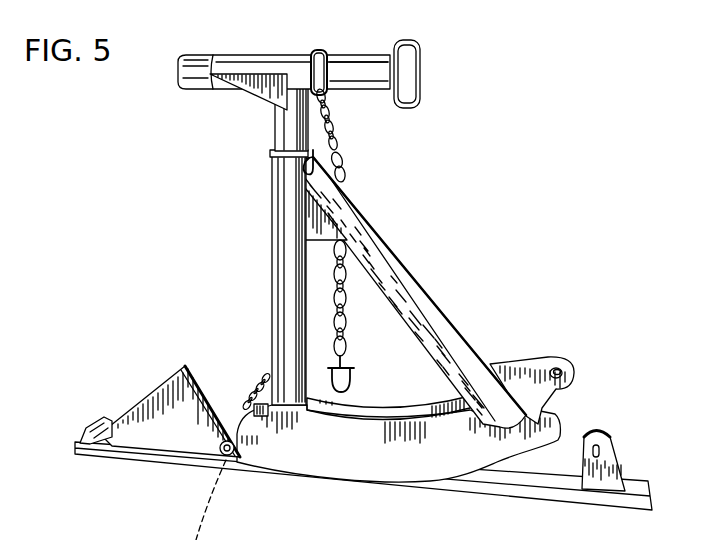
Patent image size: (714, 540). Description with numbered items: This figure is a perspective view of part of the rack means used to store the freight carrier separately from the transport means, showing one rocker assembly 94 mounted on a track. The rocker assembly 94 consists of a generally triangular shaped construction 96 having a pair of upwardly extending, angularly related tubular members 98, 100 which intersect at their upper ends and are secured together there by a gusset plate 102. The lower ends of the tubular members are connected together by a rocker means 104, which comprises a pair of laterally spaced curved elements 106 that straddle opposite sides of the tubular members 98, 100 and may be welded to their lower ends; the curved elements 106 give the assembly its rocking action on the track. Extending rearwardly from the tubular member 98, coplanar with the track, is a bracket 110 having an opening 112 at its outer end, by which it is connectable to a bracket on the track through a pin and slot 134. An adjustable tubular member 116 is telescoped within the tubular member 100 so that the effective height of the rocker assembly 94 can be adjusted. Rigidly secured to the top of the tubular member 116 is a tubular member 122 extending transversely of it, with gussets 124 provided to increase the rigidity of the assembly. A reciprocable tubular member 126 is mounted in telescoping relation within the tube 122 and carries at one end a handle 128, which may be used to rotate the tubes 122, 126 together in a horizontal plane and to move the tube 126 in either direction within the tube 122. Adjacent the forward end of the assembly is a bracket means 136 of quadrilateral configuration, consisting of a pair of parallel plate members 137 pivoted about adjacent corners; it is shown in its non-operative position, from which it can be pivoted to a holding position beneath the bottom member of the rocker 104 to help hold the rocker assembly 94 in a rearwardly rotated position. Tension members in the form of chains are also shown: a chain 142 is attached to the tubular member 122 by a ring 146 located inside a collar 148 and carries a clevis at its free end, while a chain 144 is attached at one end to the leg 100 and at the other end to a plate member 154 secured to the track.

The rocker assembly 94 is at (409, 248).
The generally triangular shaped construction 96 is at (385, 348).
The tubular member 98 is at (437, 306).
The tubular member 100 is at (272, 284).
The gusset plate 102 is at (292, 213).
The rocker means 104 is at (318, 470).
The curved elements 106 is at (378, 405).
The bracket 110 is at (527, 360).
The opening 112 is at (559, 371).
The adjustable tubular member 116 is at (278, 128).
The tubular member 122 is at (238, 58).
The gussets 124 is at (242, 93).
The reciprocable tubular member 126 is at (355, 62).
The handle 128 is at (422, 55).
The slot 134 is at (603, 447).
The bracket means 136 is at (122, 403).
The plate members 137 is at (176, 368).
The chain 142 is at (344, 158).
The chain 144 is at (250, 402).
The ring 146 is at (313, 52).
The collar 148 is at (328, 98).
The plate member 154 is at (80, 432).